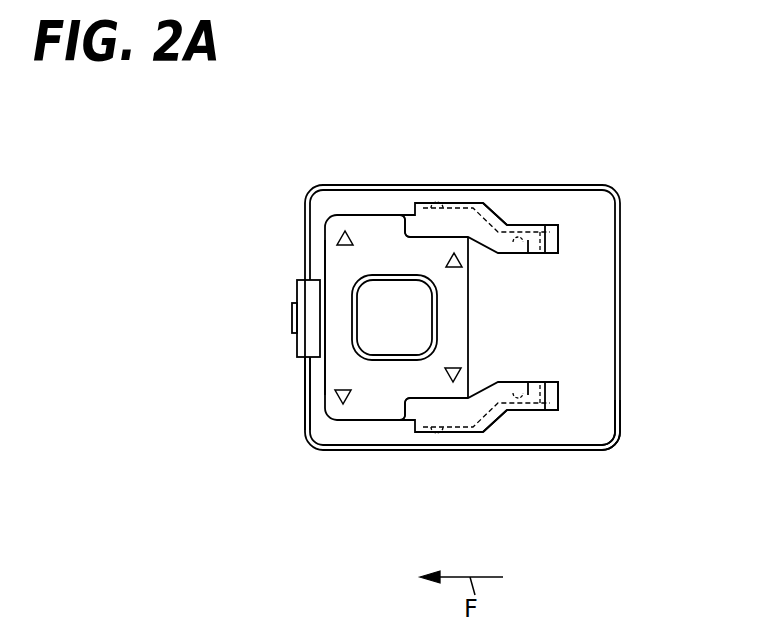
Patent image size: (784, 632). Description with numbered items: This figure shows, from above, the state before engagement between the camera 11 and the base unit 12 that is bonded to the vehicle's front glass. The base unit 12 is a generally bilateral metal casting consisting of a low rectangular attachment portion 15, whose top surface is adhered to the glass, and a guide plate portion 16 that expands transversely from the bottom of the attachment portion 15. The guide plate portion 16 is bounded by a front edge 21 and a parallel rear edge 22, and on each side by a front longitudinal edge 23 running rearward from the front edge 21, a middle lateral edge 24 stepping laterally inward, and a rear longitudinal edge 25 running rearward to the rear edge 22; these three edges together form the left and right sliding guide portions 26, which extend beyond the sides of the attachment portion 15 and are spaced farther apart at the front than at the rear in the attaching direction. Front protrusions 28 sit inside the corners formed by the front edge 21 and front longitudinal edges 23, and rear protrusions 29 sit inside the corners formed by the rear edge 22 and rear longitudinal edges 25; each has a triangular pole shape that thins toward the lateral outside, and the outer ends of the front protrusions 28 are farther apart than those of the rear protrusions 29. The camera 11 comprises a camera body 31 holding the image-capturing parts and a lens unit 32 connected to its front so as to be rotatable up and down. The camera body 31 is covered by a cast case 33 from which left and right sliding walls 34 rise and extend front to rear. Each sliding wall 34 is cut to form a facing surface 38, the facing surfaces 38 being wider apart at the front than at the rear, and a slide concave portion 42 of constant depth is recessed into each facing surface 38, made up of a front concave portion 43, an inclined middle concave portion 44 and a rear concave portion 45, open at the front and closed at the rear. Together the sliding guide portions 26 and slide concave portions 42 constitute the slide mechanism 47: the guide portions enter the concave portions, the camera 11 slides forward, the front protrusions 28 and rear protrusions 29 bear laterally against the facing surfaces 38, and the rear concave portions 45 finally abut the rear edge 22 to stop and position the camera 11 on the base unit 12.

The camera 11 is at (626, 188).
The base unit 12 is at (316, 204).
The attachment portion 15 is at (375, 295).
The guide plate portion 16 is at (337, 303).
The front edge 21 is at (320, 340).
The rear edge 22 is at (472, 308).
The front longitudinal edge 23 is at (342, 420).
The middle lateral edge 24 is at (410, 420).
The rear longitudinal edge 25 is at (453, 382).
The sliding guide portion 26 is at (374, 410).
The front protrusion 28 is at (343, 405).
The rear protrusion 29 is at (488, 425).
The camera body 31 is at (597, 453).
The lens unit 32 is at (303, 327).
The case 33 is at (590, 433).
The sliding wall 34 is at (655, 432).
The facing surface 38 is at (528, 253).
The slide concave portion 42 is at (655, 397).
The front concave portion 43 is at (433, 432).
The middle concave portion 44 is at (512, 412).
The rear concave portion 45 is at (545, 412).
The slide mechanism 47 is at (445, 330).